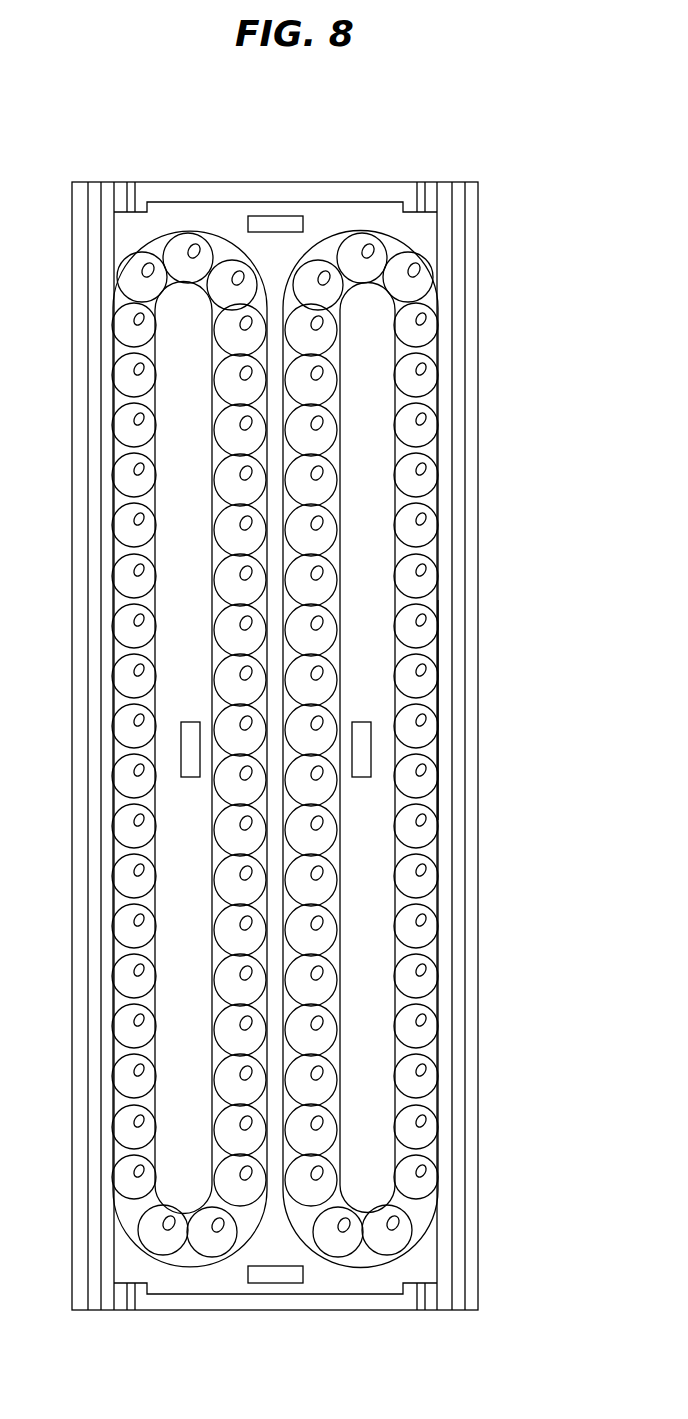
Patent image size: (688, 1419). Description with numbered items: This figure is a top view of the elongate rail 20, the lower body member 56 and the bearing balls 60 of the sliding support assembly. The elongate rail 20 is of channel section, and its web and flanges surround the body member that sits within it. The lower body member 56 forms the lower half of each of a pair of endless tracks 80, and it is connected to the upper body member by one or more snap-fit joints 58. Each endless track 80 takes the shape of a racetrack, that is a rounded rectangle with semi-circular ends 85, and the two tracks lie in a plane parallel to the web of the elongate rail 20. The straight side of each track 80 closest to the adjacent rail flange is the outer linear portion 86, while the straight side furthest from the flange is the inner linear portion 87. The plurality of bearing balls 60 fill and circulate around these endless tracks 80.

The elongate rail 20 is at (375, 183).
The lower body member 56 is at (178, 220).
The endless track 80 is at (229, 231).
The semi-circular end 85 is at (395, 250).
The bearing ball 60 is at (428, 383).
The outer linear portion 86 is at (438, 708).
The snap-fit joint 58 is at (362, 760).
The inner linear portion 87 is at (325, 965).